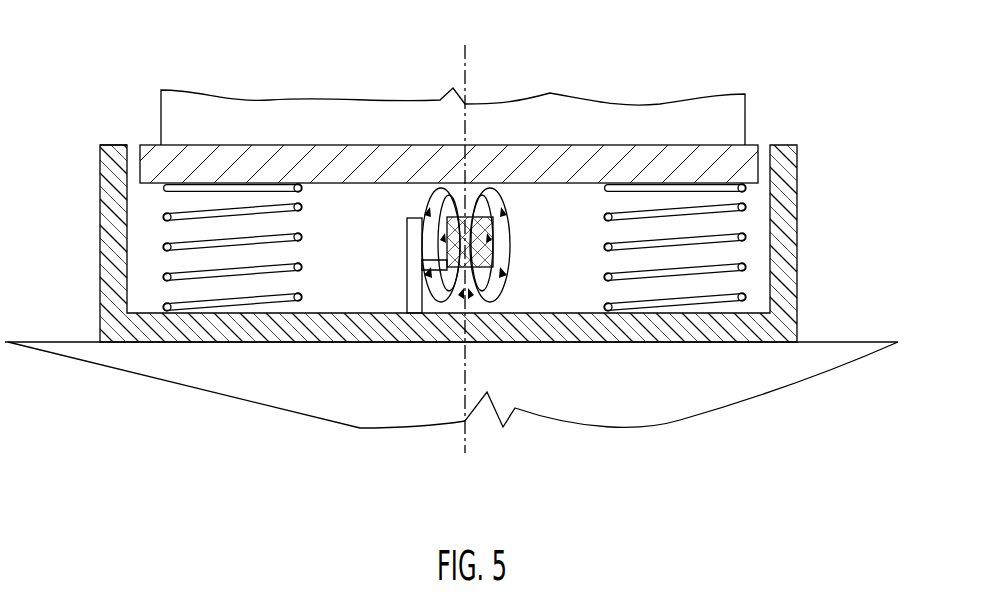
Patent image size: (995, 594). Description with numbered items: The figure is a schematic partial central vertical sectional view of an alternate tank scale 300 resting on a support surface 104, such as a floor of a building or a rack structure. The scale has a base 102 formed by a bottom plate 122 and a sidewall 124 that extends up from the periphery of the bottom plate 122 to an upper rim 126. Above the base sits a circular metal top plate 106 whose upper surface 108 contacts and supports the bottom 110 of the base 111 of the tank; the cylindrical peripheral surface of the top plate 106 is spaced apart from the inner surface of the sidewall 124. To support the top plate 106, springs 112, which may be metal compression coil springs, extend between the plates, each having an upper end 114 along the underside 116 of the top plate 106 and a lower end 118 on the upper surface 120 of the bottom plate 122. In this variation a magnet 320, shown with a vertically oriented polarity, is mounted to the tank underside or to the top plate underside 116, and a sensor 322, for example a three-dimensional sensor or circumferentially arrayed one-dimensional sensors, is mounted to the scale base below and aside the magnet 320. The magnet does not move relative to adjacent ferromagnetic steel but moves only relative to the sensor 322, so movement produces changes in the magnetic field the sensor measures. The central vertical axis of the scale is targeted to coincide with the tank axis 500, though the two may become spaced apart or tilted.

The base 102 is at (829, 266).
The support surface 104 is at (837, 340).
The top plate 106 is at (197, 163).
The upper surface 108 is at (752, 145).
The bottom 110 is at (383, 150).
The base of the tank 111 is at (548, 119).
The springs 112 is at (764, 235).
The upper end 114 is at (690, 178).
The underside 116 is at (592, 180).
The lower end 118 is at (612, 310).
The upper surface of the bottom plate 120 is at (591, 298).
The bottom plate 122 is at (200, 330).
The sidewall 124 is at (114, 245).
The upper rim 126 is at (117, 142).
The scale 300 is at (886, 92).
The magnet 320 is at (470, 215).
The sensor 322 is at (440, 268).
The tank axis 500 is at (467, 435).